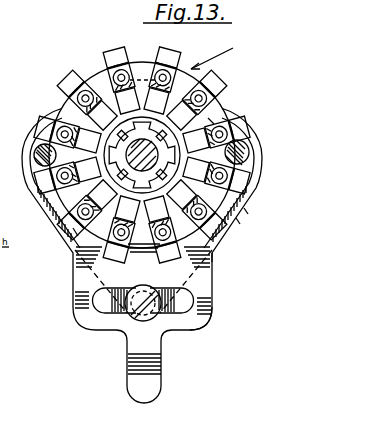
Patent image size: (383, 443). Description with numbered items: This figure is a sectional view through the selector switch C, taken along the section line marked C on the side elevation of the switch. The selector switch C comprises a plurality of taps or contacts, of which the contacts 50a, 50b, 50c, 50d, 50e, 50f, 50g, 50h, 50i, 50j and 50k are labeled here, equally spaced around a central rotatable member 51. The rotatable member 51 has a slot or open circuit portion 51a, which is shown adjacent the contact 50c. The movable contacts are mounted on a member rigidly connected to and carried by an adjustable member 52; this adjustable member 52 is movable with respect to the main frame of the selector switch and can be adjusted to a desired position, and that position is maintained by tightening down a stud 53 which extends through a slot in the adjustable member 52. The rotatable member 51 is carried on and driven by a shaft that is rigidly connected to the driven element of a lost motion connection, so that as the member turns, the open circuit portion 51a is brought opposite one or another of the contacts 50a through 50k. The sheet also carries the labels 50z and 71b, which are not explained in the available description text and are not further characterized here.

The roller assembly 50z is at (116, 52).
The tap or contact 50a is at (218, 41).
The tap or contact 50b is at (269, 68).
The tap or contact 50c is at (287, 97).
The tap or contact 50d is at (298, 147).
The tap or contact 50e is at (279, 230).
The tap or contact 50f is at (263, 259).
The tap or contact 50g is at (110, 251).
The tap or contact 50h is at (75, 232).
The tap or contact 50i is at (38, 197).
The tap or contact 50j is at (44, 127).
The tap or contact 50k is at (74, 59).
The central rotatable member 51 is at (247, 211).
The slot or open circuit portion 51a is at (211, 118).
The adjustable member 52 is at (178, 329).
The stud 53 is at (131, 315).
The mounting bracket 71b is at (99, 437).
The selector switch C is at (124, 52).